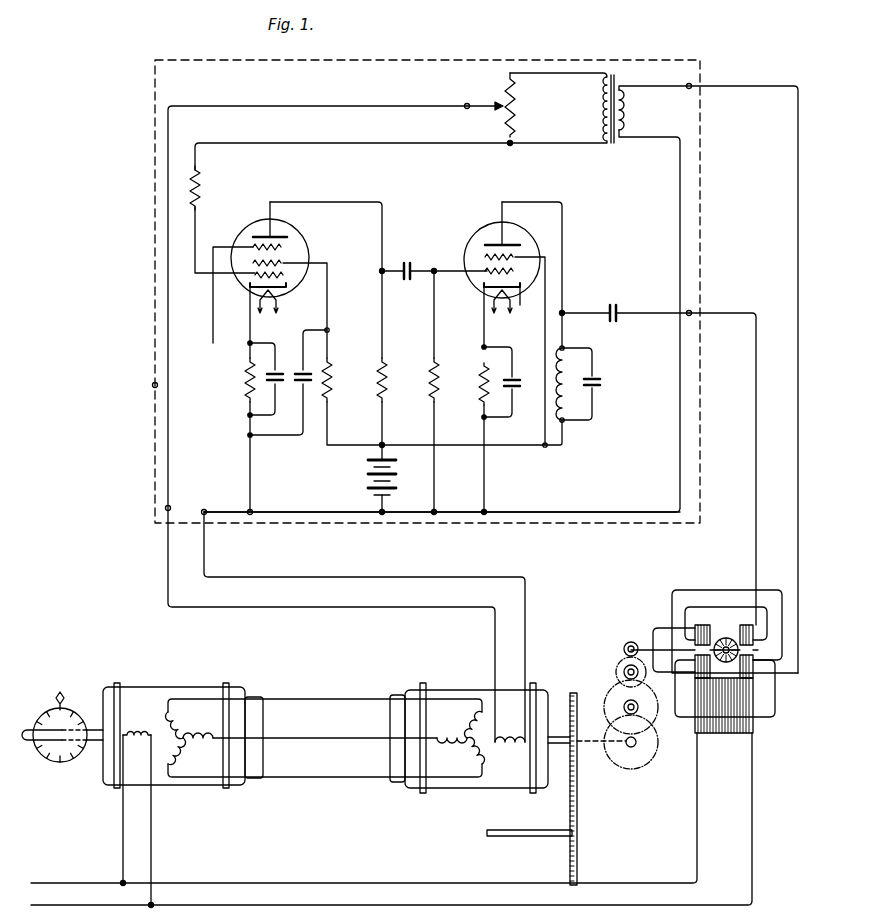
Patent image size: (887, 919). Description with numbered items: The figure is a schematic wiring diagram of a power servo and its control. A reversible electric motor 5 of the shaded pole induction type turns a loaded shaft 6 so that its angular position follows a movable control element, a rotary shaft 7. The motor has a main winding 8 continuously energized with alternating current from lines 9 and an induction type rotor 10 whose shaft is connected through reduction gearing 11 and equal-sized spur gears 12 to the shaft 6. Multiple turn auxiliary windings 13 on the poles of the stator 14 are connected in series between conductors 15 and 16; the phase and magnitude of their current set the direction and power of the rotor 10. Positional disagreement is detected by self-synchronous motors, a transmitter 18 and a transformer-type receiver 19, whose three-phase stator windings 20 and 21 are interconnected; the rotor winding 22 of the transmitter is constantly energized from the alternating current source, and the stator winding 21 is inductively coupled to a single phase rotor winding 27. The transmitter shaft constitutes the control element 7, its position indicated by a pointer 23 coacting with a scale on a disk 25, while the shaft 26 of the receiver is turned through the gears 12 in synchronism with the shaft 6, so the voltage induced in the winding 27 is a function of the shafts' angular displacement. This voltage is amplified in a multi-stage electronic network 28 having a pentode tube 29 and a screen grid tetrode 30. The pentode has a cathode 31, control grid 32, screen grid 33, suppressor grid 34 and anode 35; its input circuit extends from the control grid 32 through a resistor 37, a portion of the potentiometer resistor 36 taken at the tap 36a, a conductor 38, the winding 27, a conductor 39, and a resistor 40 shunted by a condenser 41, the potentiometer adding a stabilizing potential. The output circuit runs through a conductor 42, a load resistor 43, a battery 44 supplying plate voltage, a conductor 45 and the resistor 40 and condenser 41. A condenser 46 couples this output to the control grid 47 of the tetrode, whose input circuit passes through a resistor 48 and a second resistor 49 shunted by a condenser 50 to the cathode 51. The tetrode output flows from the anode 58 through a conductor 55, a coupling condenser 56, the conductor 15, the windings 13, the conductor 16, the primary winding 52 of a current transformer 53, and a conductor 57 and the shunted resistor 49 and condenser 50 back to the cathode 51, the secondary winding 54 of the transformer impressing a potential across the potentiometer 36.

The reversible electric motor 5 is at (712, 668).
The shaft 6 is at (540, 814).
The rotary shaft 7 is at (34, 755).
The main winding 8 is at (730, 734).
The lines 9 is at (364, 900).
The rotor 10 is at (728, 638).
The reduction gearing 11 is at (616, 670).
The spur gears 12 is at (578, 766).
The auxiliary windings 13 is at (694, 626).
The stator 14 is at (774, 704).
The conductor 15 is at (754, 486).
The conductor 16 is at (796, 450).
The self-synchronous motor 18 is at (218, 686).
The receiver 19 is at (452, 683).
The three phase stator winding 20 is at (218, 744).
The stator winding 21 is at (462, 752).
The rotor winding 22 is at (142, 708).
The pointer 23 is at (60, 688).
The disk 25 is at (66, 764).
The shaft 26 is at (606, 756).
The rotor winding 27 is at (510, 755).
The multi-stage electronic network 28 is at (196, 394).
The pentode tube 29 is at (310, 244).
The screen grid tetrode 30 is at (474, 230).
The cathode 31 is at (288, 290).
The control grid 32 is at (292, 278).
The screen grid 33 is at (294, 256).
The suppressor grid 34 is at (250, 240).
The anode 35 is at (280, 233).
The potentiometer resistor 36 is at (516, 123).
The tap 36a is at (492, 102).
The resistor 37 is at (202, 182).
The conductor 38 is at (265, 106).
The conductor 39 is at (311, 579).
The resistor 40 is at (244, 376).
The condenser 41 is at (284, 366).
The conductor 42 is at (383, 212).
The load resistor 43 is at (385, 392).
The battery 44 is at (368, 472).
The conductor 45 is at (310, 512).
The condenser 46 is at (418, 262).
The control grid 47 is at (484, 260).
The resistor 48 is at (460, 358).
The resistor 49 is at (478, 390).
The condenser 50 is at (516, 390).
The cathode 51 is at (518, 304).
The primary winding 52 is at (632, 104).
The current transformer 53 is at (618, 80).
The secondary winding 54 is at (602, 110).
The conductor 55 is at (564, 244).
The coupling condenser 56 is at (628, 290).
The conductor 57 is at (678, 209).
The anode 58 is at (508, 244).